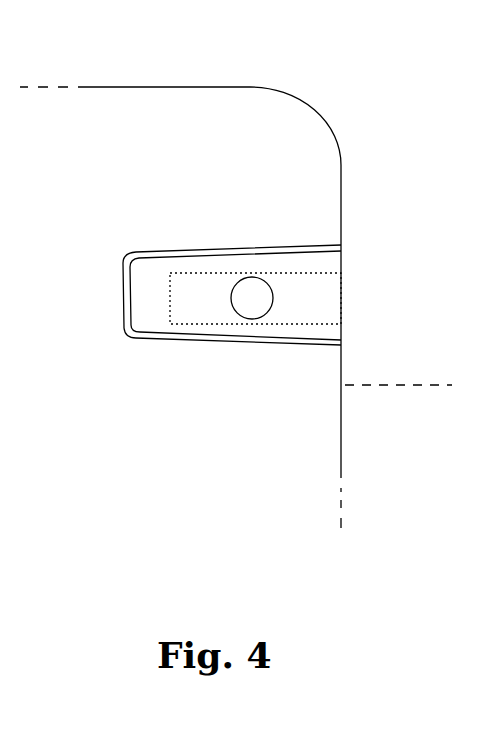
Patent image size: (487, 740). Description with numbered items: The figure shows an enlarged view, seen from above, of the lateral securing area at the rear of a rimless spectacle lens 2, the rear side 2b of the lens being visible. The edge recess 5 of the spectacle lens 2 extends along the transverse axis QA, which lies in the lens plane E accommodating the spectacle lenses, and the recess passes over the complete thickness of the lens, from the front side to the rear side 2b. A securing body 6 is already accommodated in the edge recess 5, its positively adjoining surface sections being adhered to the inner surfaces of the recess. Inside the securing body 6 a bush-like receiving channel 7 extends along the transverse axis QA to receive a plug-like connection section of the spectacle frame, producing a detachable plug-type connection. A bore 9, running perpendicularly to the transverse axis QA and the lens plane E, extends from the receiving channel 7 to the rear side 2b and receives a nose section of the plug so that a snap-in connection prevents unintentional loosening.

The spectacle lens 2 is at (206, 97).
The rear side 2b is at (277, 170).
The edge recess 5 is at (107, 375).
The securing body 6 is at (314, 258).
The bush-like receiving channel 7 is at (325, 302).
The bore 9 is at (253, 303).
The lens plane E is at (390, 65).
The transverse axis QA is at (416, 366).